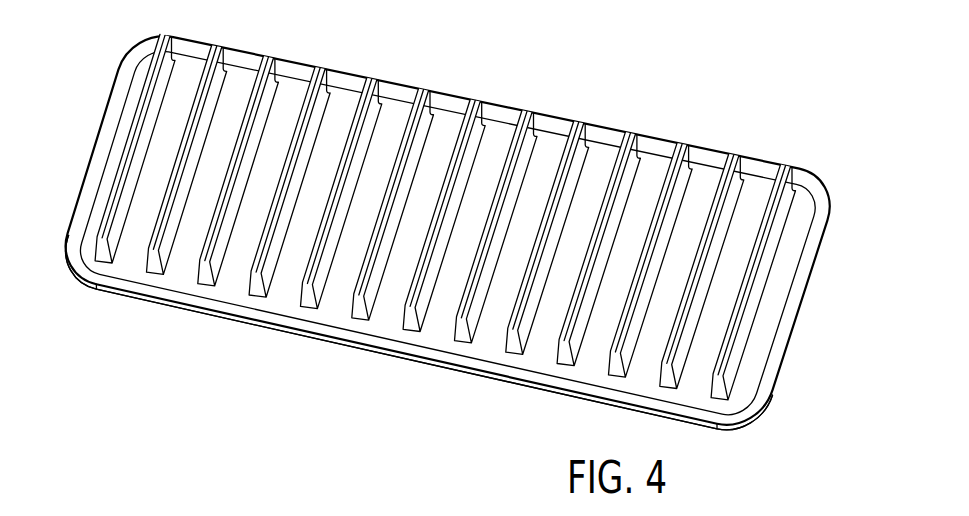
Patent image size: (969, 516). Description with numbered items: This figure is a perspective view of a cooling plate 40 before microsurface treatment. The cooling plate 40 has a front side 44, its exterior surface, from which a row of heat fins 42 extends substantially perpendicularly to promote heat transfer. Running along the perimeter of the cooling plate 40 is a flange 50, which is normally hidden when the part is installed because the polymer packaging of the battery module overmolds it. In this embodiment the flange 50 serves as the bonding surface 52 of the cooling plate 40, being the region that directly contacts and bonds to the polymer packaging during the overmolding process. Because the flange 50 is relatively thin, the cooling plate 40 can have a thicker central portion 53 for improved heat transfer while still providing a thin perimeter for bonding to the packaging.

The cooling plate 40 is at (509, 68).
The heat fins 42 is at (568, 352).
The front side 44 is at (336, 122).
The flange 50 is at (778, 327).
The bonding surface 52 is at (778, 327).
The central portion 53 is at (408, 245).